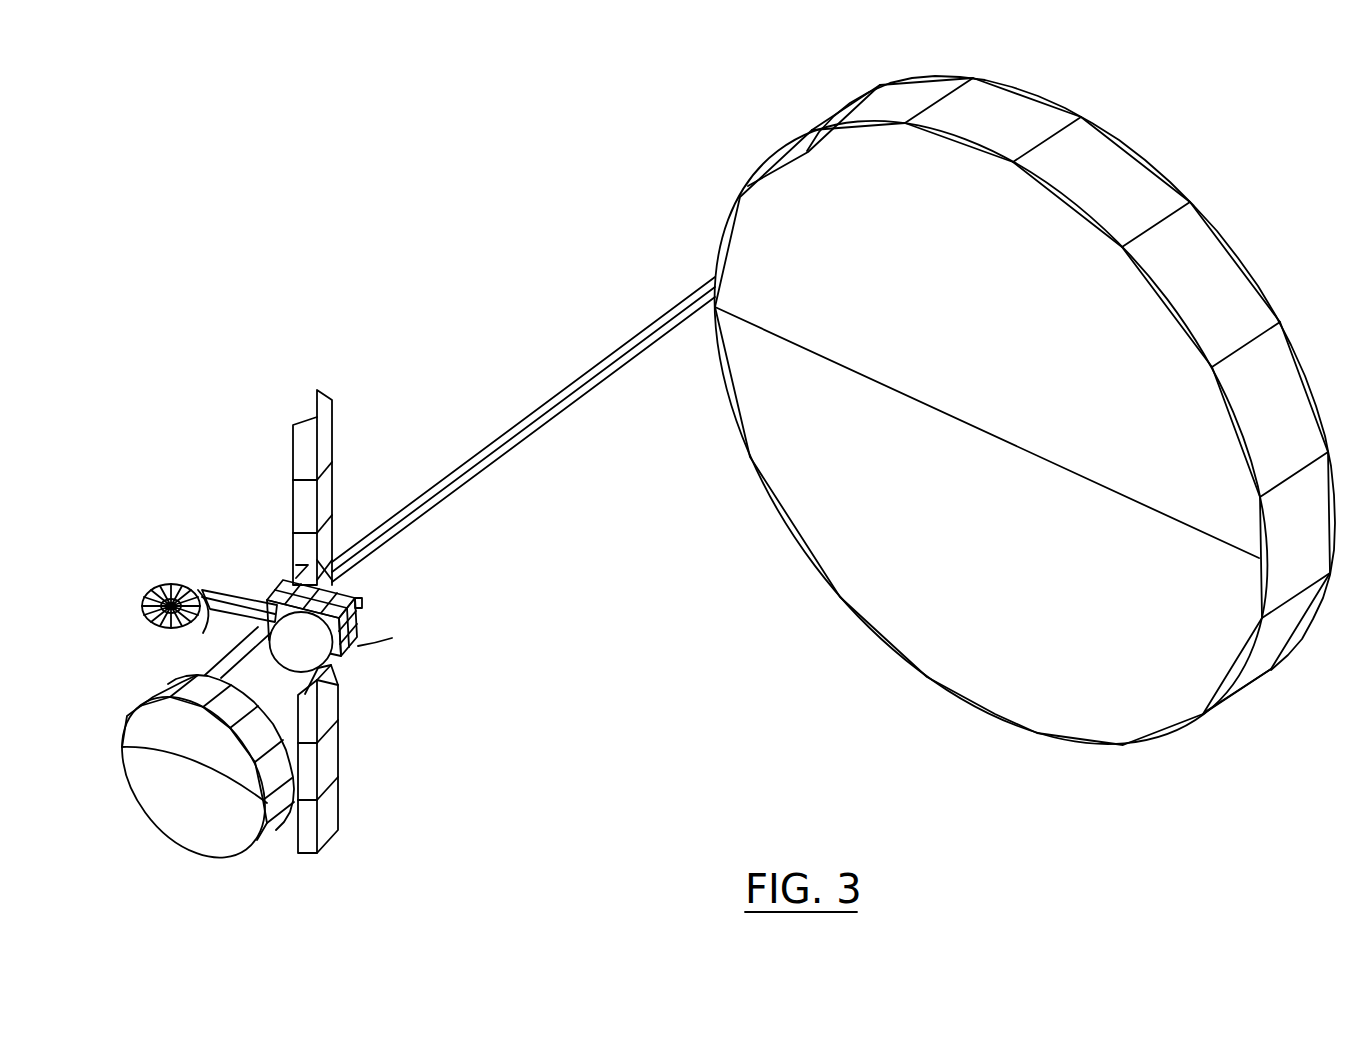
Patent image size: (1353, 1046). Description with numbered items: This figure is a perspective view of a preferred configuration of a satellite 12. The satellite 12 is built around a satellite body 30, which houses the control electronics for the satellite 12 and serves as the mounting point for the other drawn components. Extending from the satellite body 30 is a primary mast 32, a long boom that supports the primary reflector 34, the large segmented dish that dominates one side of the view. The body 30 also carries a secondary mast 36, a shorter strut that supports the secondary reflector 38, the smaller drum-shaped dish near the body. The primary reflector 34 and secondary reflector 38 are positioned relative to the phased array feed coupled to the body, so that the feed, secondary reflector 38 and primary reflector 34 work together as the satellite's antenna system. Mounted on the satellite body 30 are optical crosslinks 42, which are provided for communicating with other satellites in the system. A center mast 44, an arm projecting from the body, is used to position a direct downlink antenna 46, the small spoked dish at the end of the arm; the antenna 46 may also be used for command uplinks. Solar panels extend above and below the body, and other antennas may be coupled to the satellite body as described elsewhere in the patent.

The satellite 12 is at (446, 356).
The satellite body 30 is at (352, 590).
The primary mast 32 is at (548, 404).
The primary reflector 34 is at (1258, 289).
The secondary mast 36 is at (232, 660).
The secondary reflector 38 is at (172, 690).
The optical crosslinks 42 is at (402, 626).
The center mast 44 is at (233, 600).
The direct downlink antenna 46 is at (148, 593).